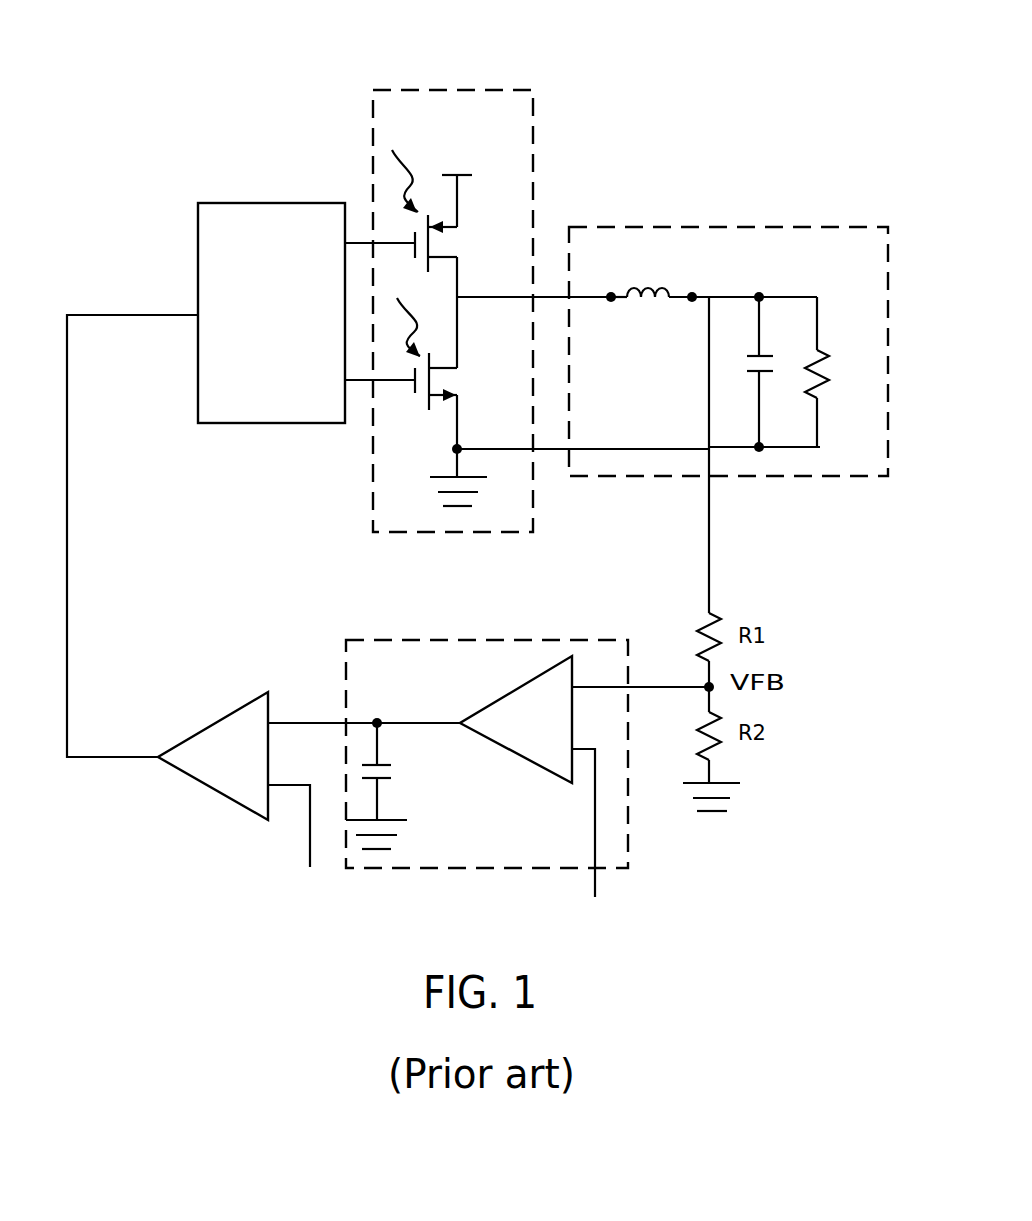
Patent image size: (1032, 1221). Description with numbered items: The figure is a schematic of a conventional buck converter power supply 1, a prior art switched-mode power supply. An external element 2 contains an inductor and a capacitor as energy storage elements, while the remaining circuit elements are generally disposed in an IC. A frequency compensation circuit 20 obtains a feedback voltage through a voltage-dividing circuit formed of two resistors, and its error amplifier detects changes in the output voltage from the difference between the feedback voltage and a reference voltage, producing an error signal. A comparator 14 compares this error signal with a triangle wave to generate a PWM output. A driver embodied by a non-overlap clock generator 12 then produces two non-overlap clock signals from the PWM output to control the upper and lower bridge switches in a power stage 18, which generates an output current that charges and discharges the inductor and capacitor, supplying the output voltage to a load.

The buck converter power supply 1 is at (606, 134).
The external element 2 is at (764, 217).
The non-overlap clock generator 12 is at (277, 202).
The comparator 14 is at (240, 708).
The power stage 18 is at (452, 90).
The frequency compensation circuit 20 is at (430, 643).